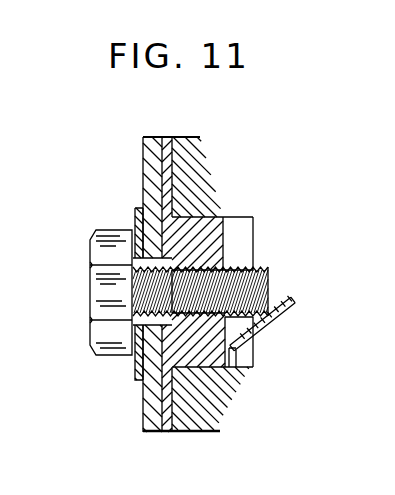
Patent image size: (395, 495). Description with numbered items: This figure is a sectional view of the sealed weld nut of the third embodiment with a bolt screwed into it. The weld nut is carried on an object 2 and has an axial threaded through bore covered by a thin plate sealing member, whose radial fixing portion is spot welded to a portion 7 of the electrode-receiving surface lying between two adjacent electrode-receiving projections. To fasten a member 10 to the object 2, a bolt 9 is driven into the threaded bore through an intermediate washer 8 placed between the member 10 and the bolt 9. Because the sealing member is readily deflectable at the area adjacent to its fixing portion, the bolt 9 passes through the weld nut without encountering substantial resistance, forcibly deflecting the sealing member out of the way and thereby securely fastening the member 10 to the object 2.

The object 2 is at (160, 170).
The portion of the electrode-receiving surface 7 is at (240, 345).
The intermediate washer 8 is at (137, 368).
The bolt 9 is at (90, 287).
The member 10 is at (146, 416).